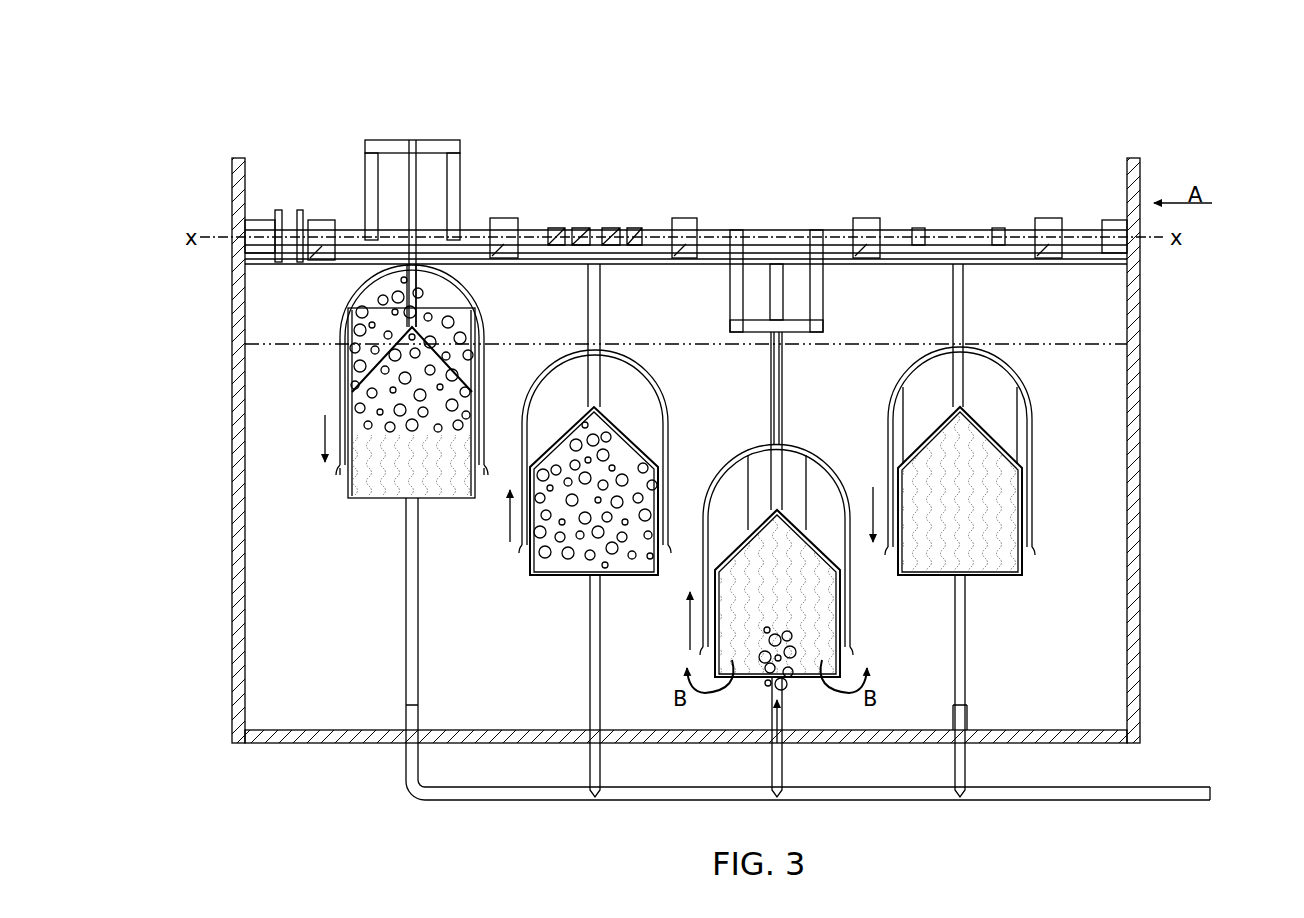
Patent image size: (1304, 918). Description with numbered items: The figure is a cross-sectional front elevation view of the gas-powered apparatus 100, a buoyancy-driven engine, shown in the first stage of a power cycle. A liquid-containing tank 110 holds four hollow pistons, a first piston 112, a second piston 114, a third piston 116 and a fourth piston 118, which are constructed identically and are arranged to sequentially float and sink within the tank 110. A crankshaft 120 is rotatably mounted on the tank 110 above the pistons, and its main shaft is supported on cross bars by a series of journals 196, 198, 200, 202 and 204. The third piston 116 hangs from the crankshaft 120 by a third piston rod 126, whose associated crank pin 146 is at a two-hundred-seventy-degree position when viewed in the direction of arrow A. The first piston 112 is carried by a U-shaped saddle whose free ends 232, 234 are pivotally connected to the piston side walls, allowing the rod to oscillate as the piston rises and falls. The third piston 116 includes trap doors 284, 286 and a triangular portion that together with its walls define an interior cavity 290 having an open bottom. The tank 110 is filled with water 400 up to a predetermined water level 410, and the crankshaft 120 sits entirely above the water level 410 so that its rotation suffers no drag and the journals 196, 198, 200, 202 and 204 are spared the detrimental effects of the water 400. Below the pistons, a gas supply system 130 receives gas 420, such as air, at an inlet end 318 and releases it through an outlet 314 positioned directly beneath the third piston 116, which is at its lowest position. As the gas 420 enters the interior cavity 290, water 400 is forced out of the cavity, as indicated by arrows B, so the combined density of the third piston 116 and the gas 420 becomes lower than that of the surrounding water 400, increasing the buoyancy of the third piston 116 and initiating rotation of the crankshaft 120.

The gas-powered apparatus 100 is at (408, 76).
The tank 110 is at (232, 645).
The first piston 112 is at (350, 400).
The second piston 114 is at (640, 430).
The third piston 116 is at (845, 605).
The fourth piston 118 is at (1030, 492).
The crankshaft 120 is at (345, 198).
The third piston rod 126 is at (783, 377).
The gas supply system 130 is at (862, 806).
The crank pin 146 is at (793, 335).
The journal 196 is at (322, 220).
The journal 198 is at (505, 218).
The journal 200 is at (685, 218).
The journal 202 is at (868, 218).
The journal 204 is at (1048, 218).
The free end of saddle 232 is at (340, 472).
The free end of saddle 234 is at (485, 472).
The trap door 284 is at (748, 500).
The trap door 286 is at (806, 500).
The interior cavity 290 is at (812, 611).
The outlet 314 is at (770, 717).
The inlet end 318 is at (1212, 795).
The water 400 is at (333, 673).
The water level 410 is at (1085, 344).
The gas 420 is at (380, 300).